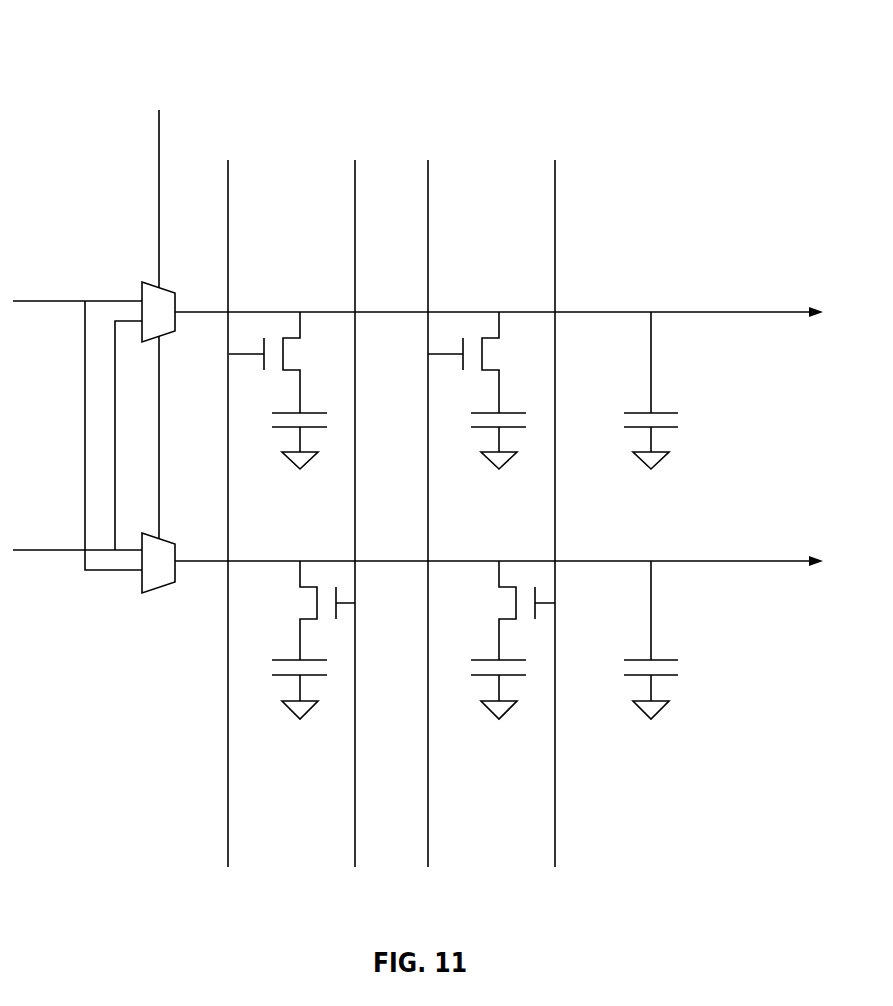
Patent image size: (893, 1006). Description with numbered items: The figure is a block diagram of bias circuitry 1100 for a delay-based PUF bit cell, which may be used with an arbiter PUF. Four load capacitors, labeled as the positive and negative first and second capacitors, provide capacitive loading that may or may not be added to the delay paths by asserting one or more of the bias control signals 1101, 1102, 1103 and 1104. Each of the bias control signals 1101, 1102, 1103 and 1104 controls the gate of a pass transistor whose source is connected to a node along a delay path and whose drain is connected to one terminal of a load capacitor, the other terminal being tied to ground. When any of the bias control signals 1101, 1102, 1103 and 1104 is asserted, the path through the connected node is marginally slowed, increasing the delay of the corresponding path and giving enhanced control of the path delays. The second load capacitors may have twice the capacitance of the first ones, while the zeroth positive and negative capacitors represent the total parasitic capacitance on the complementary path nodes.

The bias circuitry 1100 is at (148, 58).
The bias control signal 1101 is at (555, 793).
The bias control signal 1102 is at (428, 762).
The bias control signal 1103 is at (355, 785).
The bias control signal 1104 is at (228, 795).